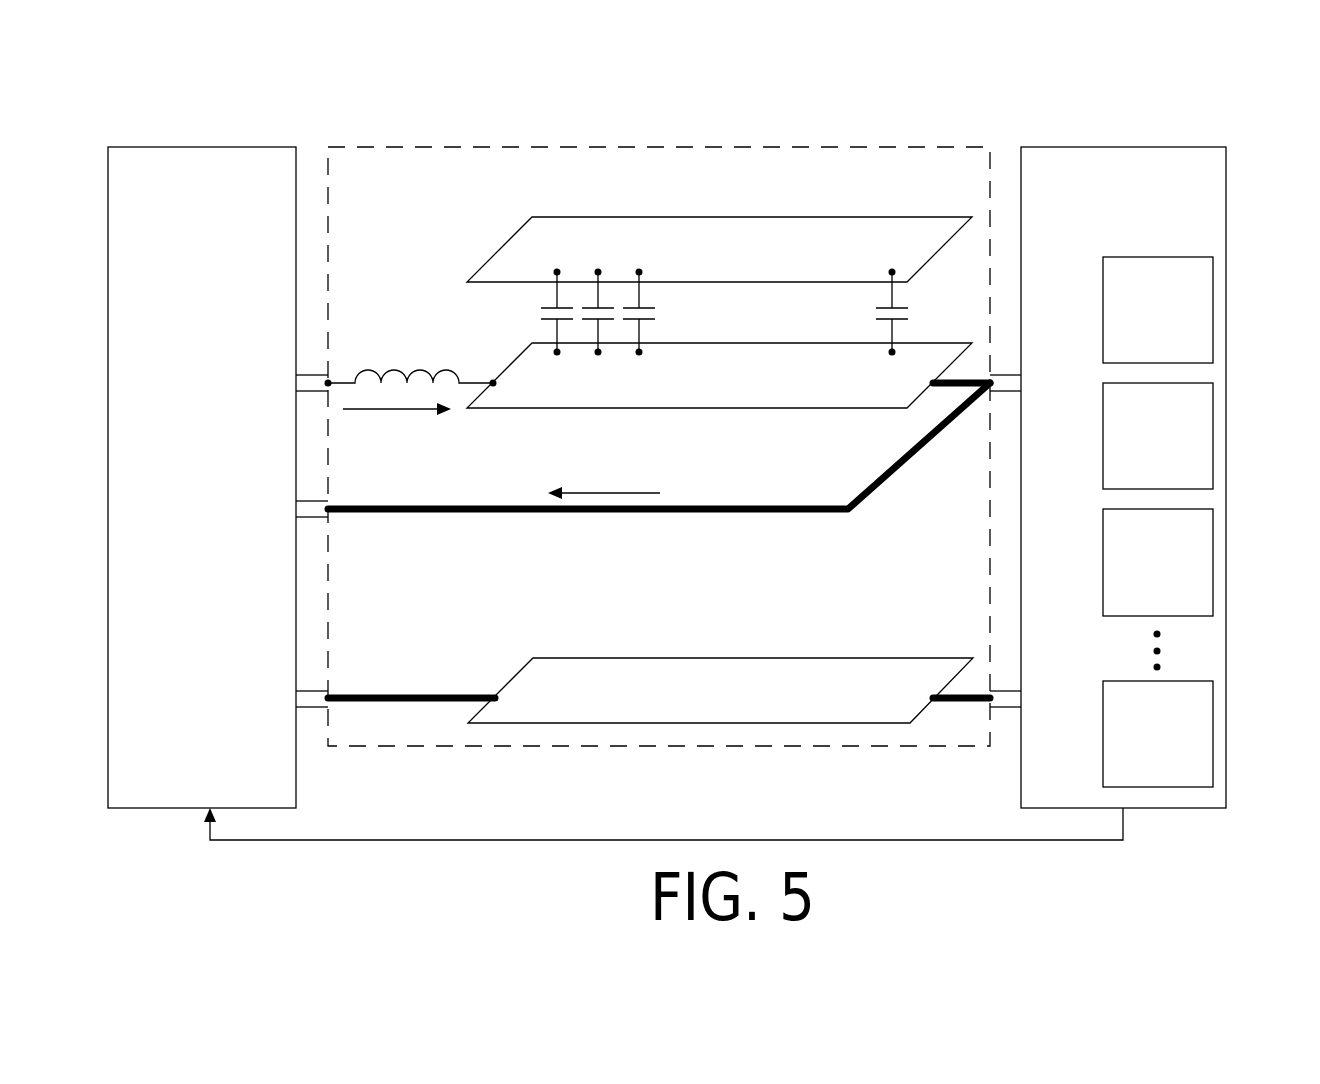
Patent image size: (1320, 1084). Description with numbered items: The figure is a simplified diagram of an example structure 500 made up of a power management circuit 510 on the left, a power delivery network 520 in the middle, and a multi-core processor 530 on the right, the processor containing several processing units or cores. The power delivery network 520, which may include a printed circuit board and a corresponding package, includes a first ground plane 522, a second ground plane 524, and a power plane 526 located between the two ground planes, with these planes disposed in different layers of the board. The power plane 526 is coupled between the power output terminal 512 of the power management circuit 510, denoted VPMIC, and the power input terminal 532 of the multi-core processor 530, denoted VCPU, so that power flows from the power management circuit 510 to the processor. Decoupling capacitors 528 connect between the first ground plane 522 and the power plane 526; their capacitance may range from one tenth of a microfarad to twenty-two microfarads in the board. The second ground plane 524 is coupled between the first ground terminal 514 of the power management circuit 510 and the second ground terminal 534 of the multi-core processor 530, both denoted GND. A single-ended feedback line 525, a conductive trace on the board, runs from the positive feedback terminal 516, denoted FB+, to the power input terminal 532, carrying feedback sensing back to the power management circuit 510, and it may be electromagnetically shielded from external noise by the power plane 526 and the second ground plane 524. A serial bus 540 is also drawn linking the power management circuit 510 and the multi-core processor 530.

The structure 500 is at (728, 108).
The power management circuit 510 is at (200, 147).
The power output terminal 512 is at (296, 393).
The first ground terminal 514 is at (296, 710).
The positive feedback terminal 516 is at (296, 497).
The power delivery network 520 is at (815, 147).
The first ground plane 522 is at (910, 217).
The second ground plane 524 is at (910, 658).
The single-ended feedback line 525 is at (737, 508).
The power plane 526 is at (910, 343).
The decoupling capacitors 528 is at (507, 319).
The multi-core processor 530 is at (1130, 147).
The power input terminal 532 is at (1021, 395).
The second ground terminal 534 is at (1021, 710).
The serial bus 540 is at (735, 840).